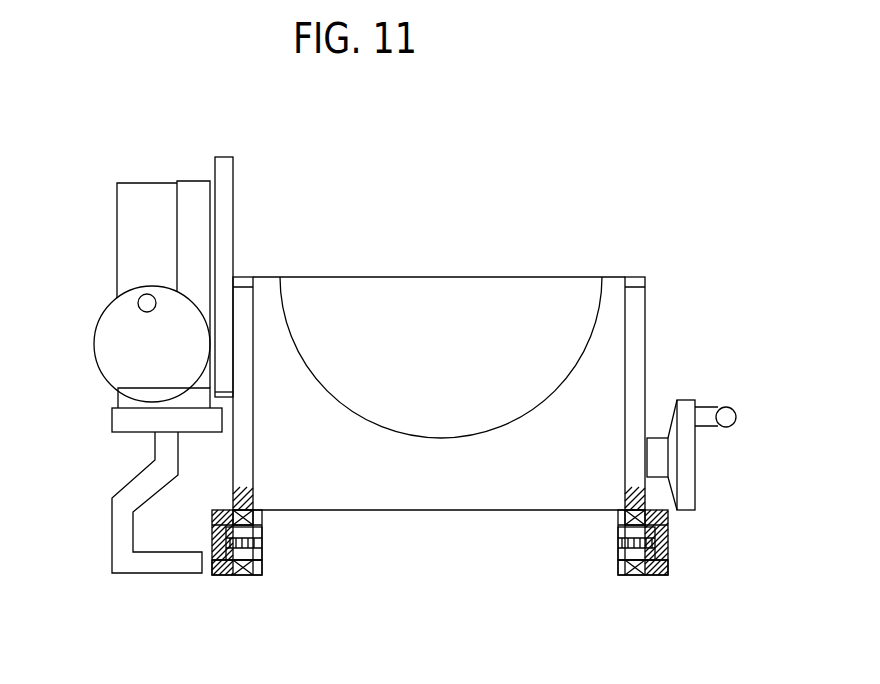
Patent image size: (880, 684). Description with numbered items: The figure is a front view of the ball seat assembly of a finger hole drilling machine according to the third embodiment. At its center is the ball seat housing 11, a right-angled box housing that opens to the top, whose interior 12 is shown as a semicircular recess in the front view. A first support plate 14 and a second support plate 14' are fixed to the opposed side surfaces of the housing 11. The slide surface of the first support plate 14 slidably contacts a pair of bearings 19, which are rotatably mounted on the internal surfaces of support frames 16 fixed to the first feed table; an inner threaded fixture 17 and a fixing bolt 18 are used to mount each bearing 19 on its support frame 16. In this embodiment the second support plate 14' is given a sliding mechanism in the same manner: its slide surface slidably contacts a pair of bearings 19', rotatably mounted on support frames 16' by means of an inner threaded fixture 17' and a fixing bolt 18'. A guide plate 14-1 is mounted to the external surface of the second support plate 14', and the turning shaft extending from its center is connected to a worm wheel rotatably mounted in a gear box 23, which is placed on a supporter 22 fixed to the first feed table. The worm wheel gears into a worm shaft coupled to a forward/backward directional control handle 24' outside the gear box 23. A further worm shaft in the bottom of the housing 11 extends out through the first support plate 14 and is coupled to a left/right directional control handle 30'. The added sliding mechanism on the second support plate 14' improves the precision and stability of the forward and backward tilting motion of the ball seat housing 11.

The ball seat housing 11 is at (607, 355).
The bowl-shaped inner surface of drum 12 is at (445, 310).
The first support plate 14 is at (671, 390).
The second support plate 14' is at (280, 323).
The guide plate 14-1 is at (224, 172).
The support frame 16 is at (646, 582).
The support frame 16' is at (230, 587).
The inner threaded fixture 17 is at (626, 611).
The inner threaded fixture 17' is at (257, 607).
The fixing bolt 18 is at (592, 562).
The fixing bolt 18' is at (290, 571).
The bearing 19 is at (583, 532).
The bearing 19' is at (284, 534).
The supporter 22 is at (123, 515).
The gear box 23 is at (148, 227).
The forward/backward directional control handle 24' is at (127, 331).
The left/right directional control handle 30' is at (725, 422).